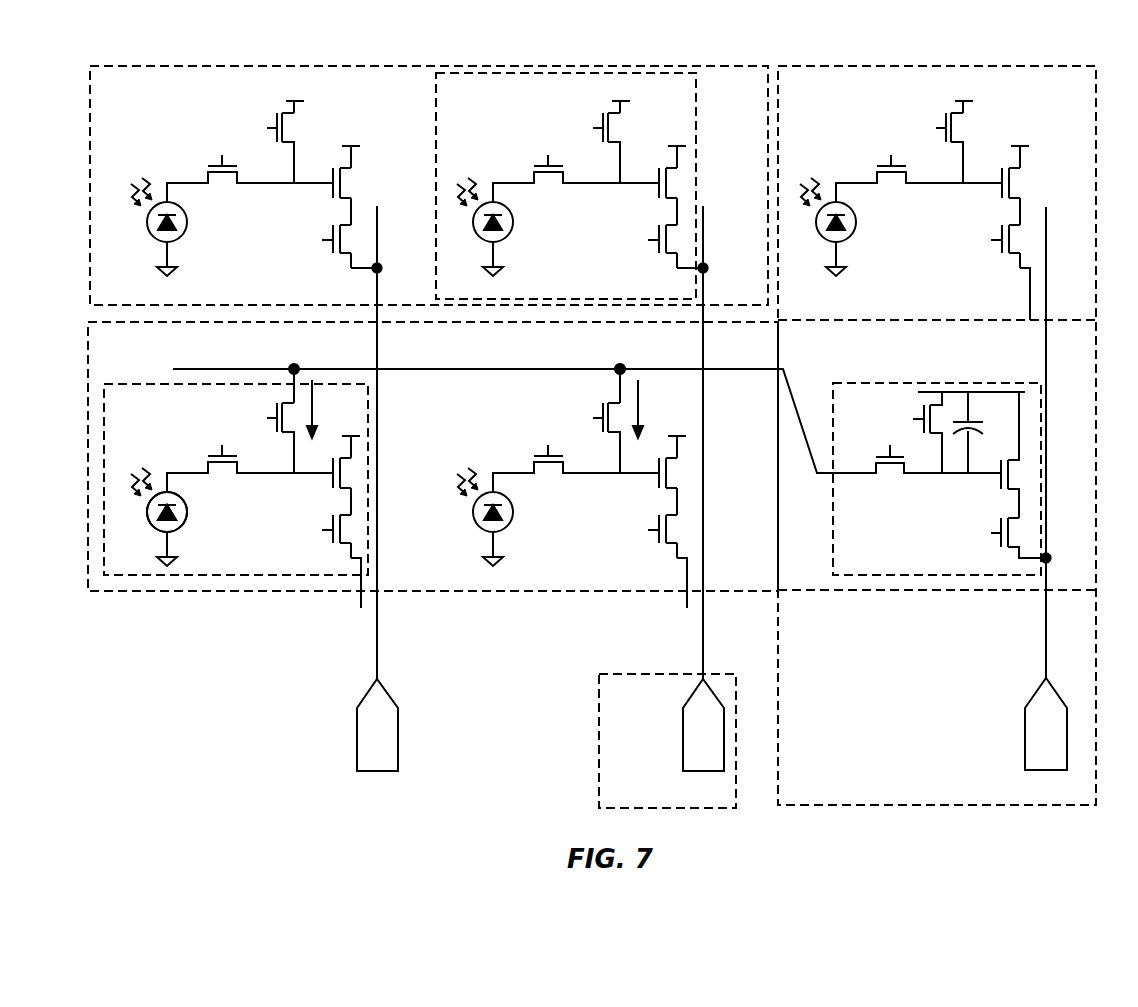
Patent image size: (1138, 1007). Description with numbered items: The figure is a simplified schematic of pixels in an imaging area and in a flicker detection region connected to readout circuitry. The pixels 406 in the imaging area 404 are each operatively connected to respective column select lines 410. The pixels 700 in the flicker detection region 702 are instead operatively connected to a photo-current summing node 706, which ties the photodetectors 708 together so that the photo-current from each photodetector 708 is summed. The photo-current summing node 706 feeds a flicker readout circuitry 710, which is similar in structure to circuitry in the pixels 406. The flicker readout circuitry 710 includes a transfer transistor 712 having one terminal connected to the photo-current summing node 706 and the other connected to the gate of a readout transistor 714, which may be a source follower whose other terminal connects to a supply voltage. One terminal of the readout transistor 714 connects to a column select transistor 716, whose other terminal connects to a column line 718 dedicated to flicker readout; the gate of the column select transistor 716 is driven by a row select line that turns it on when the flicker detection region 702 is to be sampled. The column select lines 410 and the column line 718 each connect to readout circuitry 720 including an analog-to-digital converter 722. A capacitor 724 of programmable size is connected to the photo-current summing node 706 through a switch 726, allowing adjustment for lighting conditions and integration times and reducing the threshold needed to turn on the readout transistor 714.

The imaging area 404 is at (299, 62).
The pixels 406 is at (538, 68).
The column select lines 410 is at (704, 222).
The pixels 700 is at (245, 577).
The flicker detection region 702 is at (478, 592).
The photo-current summing node 706 is at (294, 368).
The photodetectors 708 is at (157, 532).
The flicker readout circuitry 710 is at (885, 576).
The transfer transistor 712 is at (964, 465).
The readout transistor 714 is at (1067, 462).
The column select transistor 716 is at (1025, 529).
The column line 718 is at (1047, 228).
The readout circuitry 720 is at (597, 714).
The analog-to-digital converter 722 is at (683, 740).
The capacitor 724 is at (984, 412).
The switch 726 is at (902, 416).